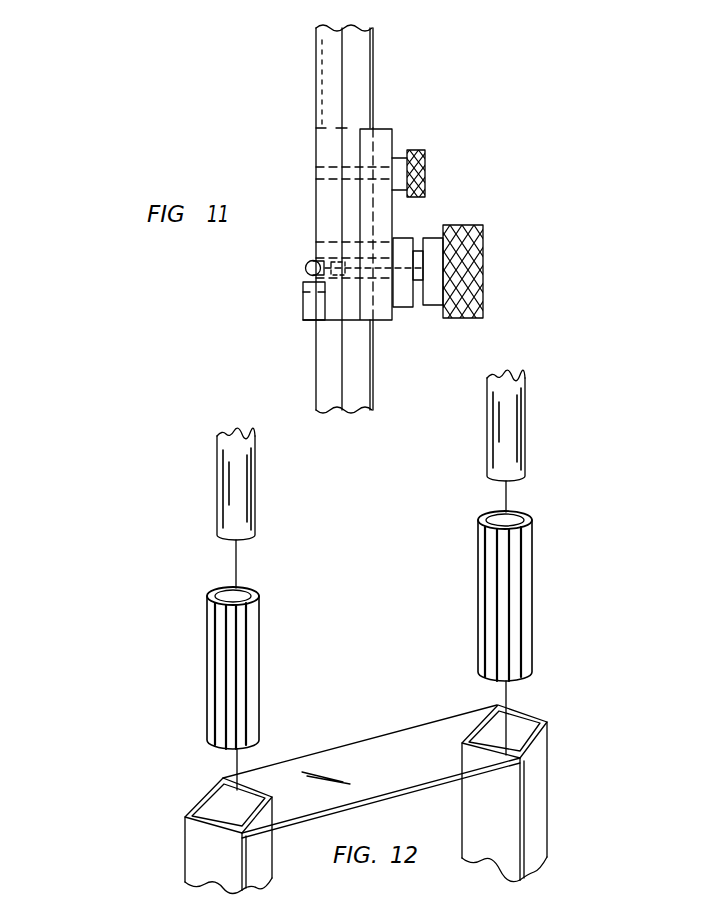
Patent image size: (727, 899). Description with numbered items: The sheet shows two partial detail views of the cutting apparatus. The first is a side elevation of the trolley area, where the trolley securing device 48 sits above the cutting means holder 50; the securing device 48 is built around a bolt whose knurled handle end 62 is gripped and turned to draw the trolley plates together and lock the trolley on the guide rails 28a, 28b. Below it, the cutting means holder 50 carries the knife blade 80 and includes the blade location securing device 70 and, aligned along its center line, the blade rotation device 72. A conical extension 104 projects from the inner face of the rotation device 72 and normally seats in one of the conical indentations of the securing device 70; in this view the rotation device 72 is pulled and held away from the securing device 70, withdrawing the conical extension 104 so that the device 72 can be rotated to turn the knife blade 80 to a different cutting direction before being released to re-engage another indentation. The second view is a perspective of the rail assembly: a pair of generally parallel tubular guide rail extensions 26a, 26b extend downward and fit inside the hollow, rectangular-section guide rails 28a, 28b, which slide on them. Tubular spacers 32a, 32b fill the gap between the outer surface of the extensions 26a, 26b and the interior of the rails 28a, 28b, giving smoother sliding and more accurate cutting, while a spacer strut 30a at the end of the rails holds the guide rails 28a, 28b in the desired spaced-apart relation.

In FIG. 11, the trolley securing device 48 is at (404, 130).
In FIG. 11, the handle end 62 is at (423, 157).
In FIG. 11, the blade location securing device 70 is at (407, 308).
In FIG. 11, the conical extension 104 is at (416, 240).
In FIG. 11, the cutting means holder 50 is at (426, 333).
In FIG. 11, the blade rotation device 72 is at (484, 235).
In FIG. 11, the knife blade 80 is at (306, 263).
In FIG. 12, the guide rail extension 26a is at (217, 467).
In FIG. 12, the guide rail extension 26b is at (523, 417).
In FIG. 12, the tubular spacer 32a is at (211, 598).
In FIG. 12, the tubular spacer 32b is at (523, 516).
In FIG. 12, the spacer strut 30a is at (368, 762).
In FIG. 12, the guide rail 28a is at (203, 853).
In FIG. 12, the guide rail 28b is at (535, 805).